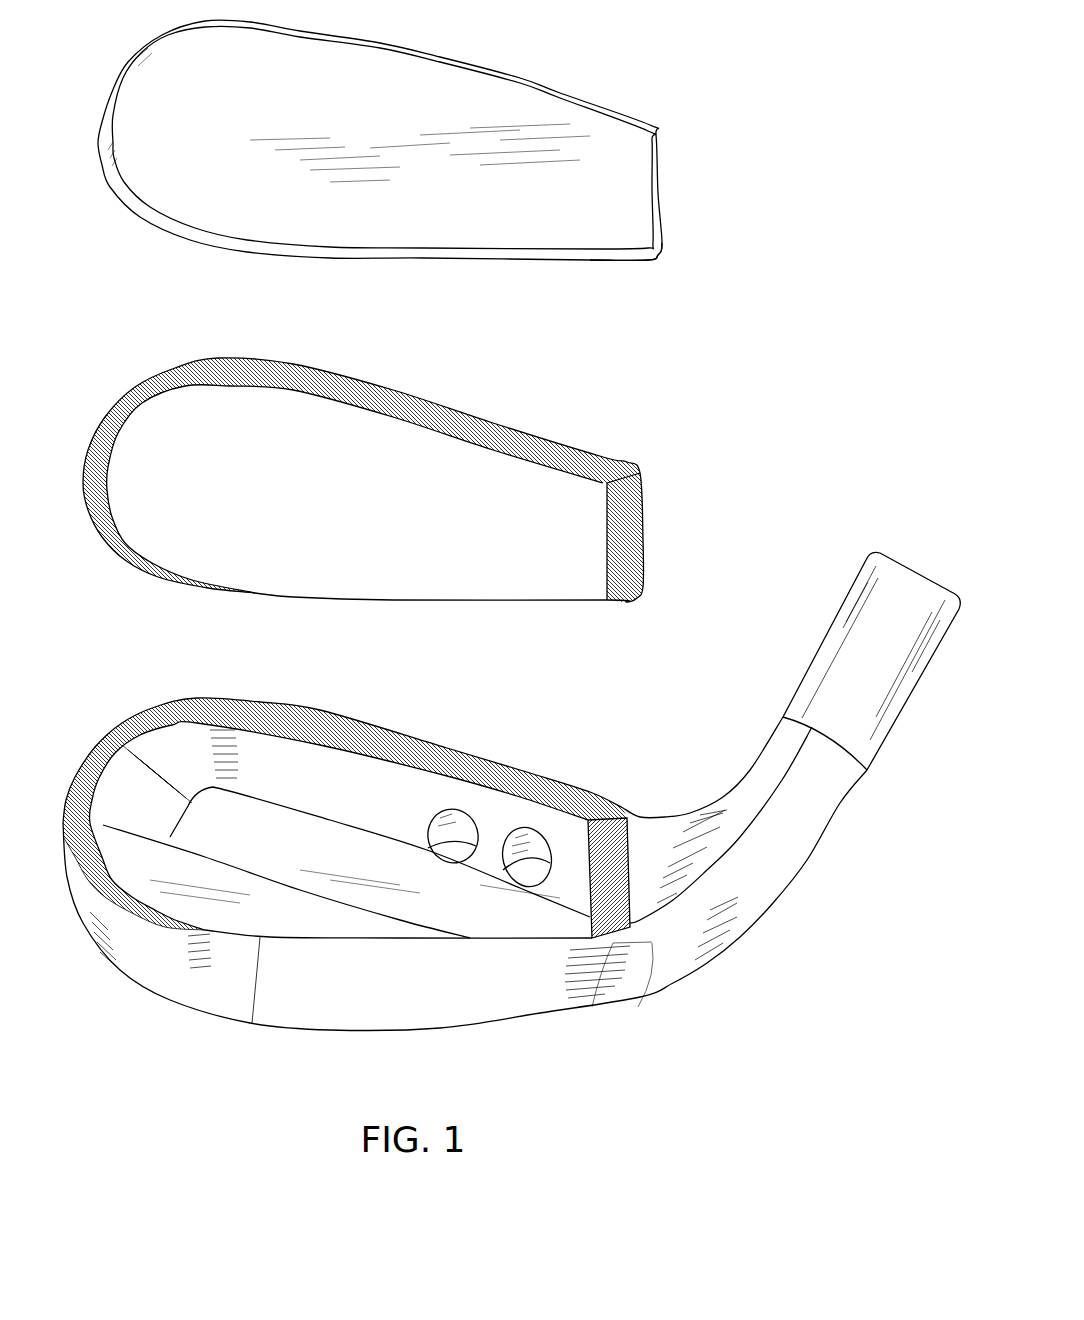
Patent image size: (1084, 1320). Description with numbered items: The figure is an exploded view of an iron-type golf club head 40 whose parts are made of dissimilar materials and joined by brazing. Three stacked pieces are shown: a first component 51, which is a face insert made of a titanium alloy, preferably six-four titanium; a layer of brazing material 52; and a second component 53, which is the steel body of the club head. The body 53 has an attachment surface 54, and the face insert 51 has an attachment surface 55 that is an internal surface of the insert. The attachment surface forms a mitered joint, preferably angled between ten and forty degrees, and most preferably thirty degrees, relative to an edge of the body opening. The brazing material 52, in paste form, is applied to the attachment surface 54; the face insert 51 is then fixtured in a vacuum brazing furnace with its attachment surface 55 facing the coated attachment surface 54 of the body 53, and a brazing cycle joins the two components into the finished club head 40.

The iron-type golf club head 40 is at (809, 182).
The first component 51 is at (489, 88).
The brazing material 52 is at (115, 412).
The second component 53 is at (501, 791).
The attachment surface 54 is at (250, 713).
The attachment surface 55 is at (610, 261).